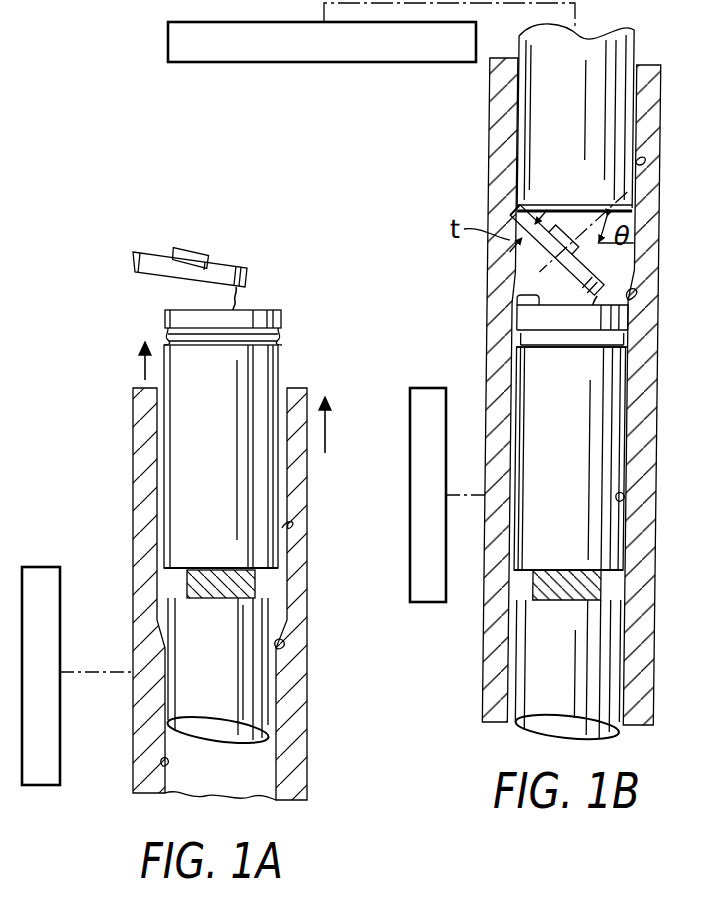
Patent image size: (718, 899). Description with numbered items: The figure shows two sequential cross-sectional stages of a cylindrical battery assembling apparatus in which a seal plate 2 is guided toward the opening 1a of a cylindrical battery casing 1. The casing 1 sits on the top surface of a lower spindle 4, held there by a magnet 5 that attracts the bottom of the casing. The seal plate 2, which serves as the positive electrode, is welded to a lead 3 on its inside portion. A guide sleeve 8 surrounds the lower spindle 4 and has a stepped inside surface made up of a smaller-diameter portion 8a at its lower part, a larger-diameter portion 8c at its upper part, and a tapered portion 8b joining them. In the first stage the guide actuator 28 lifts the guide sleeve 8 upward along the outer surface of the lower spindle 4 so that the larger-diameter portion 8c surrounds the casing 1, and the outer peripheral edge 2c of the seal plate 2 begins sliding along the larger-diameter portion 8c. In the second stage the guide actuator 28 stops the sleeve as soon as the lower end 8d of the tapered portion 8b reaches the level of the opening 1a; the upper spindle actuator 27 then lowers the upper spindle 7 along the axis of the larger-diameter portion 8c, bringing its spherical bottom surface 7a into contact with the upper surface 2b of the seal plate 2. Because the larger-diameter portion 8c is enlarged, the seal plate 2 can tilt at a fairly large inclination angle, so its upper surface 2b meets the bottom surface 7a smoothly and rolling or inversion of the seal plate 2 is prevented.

In FIG. 1A, the cylindrical battery casing 1 is at (175, 447).
In FIG. 1B, the cylindrical battery casing 1 is at (535, 365).
In FIG. 1A, the opening 1a is at (275, 312).
In FIG. 1B, the opening 1a is at (512, 300).
In FIG. 1A, the seal plate 2 is at (228, 264).
In FIG. 1B, the seal plate 2 is at (538, 256).
In FIG. 1B, the upper surface 2b is at (597, 262).
In FIG. 1B, the outer peripheral edge 2c is at (512, 212).
In FIG. 1A, the lead 3 is at (243, 293).
In FIG. 1B, the lead 3 is at (595, 300).
In FIG. 1A, the lower spindle 4 is at (255, 620).
In FIG. 1B, the lower spindle 4 is at (532, 696).
In FIG. 1A, the magnet 5 is at (190, 580).
In FIG. 1B, the magnet 5 is at (604, 585).
In FIG. 1B, the upper spindle 7 is at (615, 60).
In FIG. 1B, the bottom surface 7a is at (640, 214).
In FIG. 1A, the guide sleeve 8 is at (301, 388).
In FIG. 1B, the guide sleeve 8 is at (488, 118).
In FIG. 1A, the smaller-diameter portion 8a is at (162, 760).
In FIG. 1B, the smaller-diameter portion 8a is at (618, 497).
In FIG. 1A, the tapered portion 8b is at (300, 650).
In FIG. 1B, the tapered portion 8b is at (632, 300).
In FIG. 1A, the larger-diameter portion 8c is at (283, 525).
In FIG. 1B, the larger-diameter portion 8c is at (636, 160).
In FIG. 1B, the lower end of tapered portion 8d is at (640, 330).
In FIG. 1B, the upper spindle actuator 27 is at (350, 62).
In FIG. 1A, the guide actuator 28 is at (40, 567).
In FIG. 1B, the guide actuator 28 is at (445, 602).